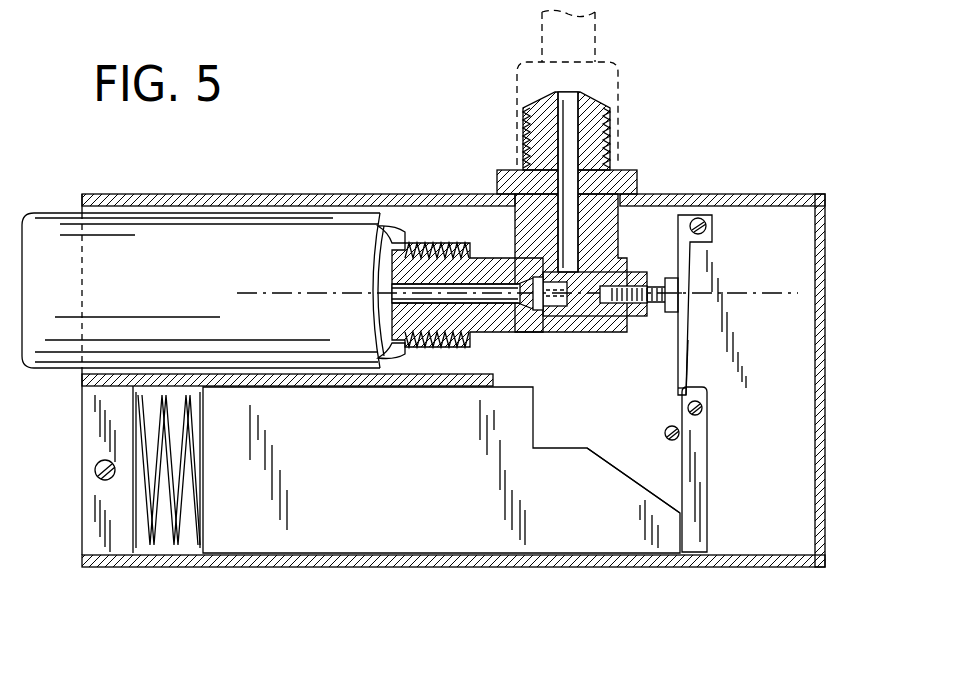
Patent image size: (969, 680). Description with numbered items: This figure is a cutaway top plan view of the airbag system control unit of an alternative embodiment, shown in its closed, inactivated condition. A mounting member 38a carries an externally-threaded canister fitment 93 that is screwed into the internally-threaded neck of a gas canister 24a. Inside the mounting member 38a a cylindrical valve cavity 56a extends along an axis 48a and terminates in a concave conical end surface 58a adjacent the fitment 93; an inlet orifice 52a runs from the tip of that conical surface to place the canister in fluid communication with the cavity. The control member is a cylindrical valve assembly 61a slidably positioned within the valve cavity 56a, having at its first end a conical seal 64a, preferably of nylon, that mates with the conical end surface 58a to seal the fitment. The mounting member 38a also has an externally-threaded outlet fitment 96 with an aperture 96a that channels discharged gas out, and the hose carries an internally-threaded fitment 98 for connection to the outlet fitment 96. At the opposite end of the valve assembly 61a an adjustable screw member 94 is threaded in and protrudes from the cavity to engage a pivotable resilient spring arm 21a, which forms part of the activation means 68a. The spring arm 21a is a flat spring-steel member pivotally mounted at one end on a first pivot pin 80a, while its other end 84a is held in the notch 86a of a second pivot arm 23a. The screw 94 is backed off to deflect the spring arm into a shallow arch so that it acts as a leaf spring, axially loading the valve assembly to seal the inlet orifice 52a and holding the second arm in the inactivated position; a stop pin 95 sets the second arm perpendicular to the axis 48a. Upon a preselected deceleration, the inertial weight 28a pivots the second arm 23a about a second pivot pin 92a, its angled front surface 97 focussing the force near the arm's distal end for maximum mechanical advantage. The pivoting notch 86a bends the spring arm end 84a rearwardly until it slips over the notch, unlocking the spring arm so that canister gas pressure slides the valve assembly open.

The spring arm 21a is at (713, 273).
The second pivot arm 23a is at (707, 510).
The gas canister 24a is at (266, 213).
The inertial weight 28a is at (425, 520).
The mounting member 38a is at (620, 237).
The axis 48a is at (261, 290).
The inlet orifice 52a is at (397, 297).
The valve cavity 56a is at (583, 316).
The conical end surface 58a is at (534, 309).
The valve assembly 61a is at (580, 285).
The conical seal 64a is at (473, 247).
The activation means 68a is at (770, 328).
The first pivot pin 80a is at (706, 228).
The spring arm end 84a is at (686, 381).
The notch 86a is at (680, 388).
The second pivot pin 92a is at (702, 418).
The canister fitment 93 is at (392, 280).
The adjustable screw member 94 is at (674, 315).
The stop pin 95 is at (666, 437).
The outlet fitment 96 is at (590, 100).
The aperture 96a is at (575, 117).
The angled front surface 97 is at (609, 459).
The internally-threaded fitment 98 is at (517, 95).